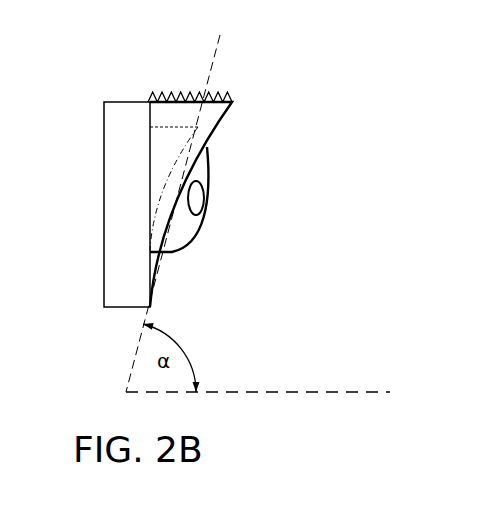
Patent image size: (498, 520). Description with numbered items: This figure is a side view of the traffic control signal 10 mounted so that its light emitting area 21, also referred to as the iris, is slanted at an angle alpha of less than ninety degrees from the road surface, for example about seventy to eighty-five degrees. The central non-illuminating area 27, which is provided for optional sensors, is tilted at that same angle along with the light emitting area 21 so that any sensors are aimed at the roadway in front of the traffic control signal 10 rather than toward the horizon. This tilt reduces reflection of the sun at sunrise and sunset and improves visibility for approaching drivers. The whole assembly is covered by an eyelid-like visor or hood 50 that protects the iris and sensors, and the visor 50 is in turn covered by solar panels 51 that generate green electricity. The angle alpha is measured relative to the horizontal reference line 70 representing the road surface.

The traffic control signal 10 is at (125, 308).
The light emitting area 21 is at (208, 168).
The central non-illuminating area 27 is at (205, 200).
The visor 50 is at (222, 120).
The solar panels 51 is at (178, 92).
The horizontal reference plane 70 is at (320, 392).